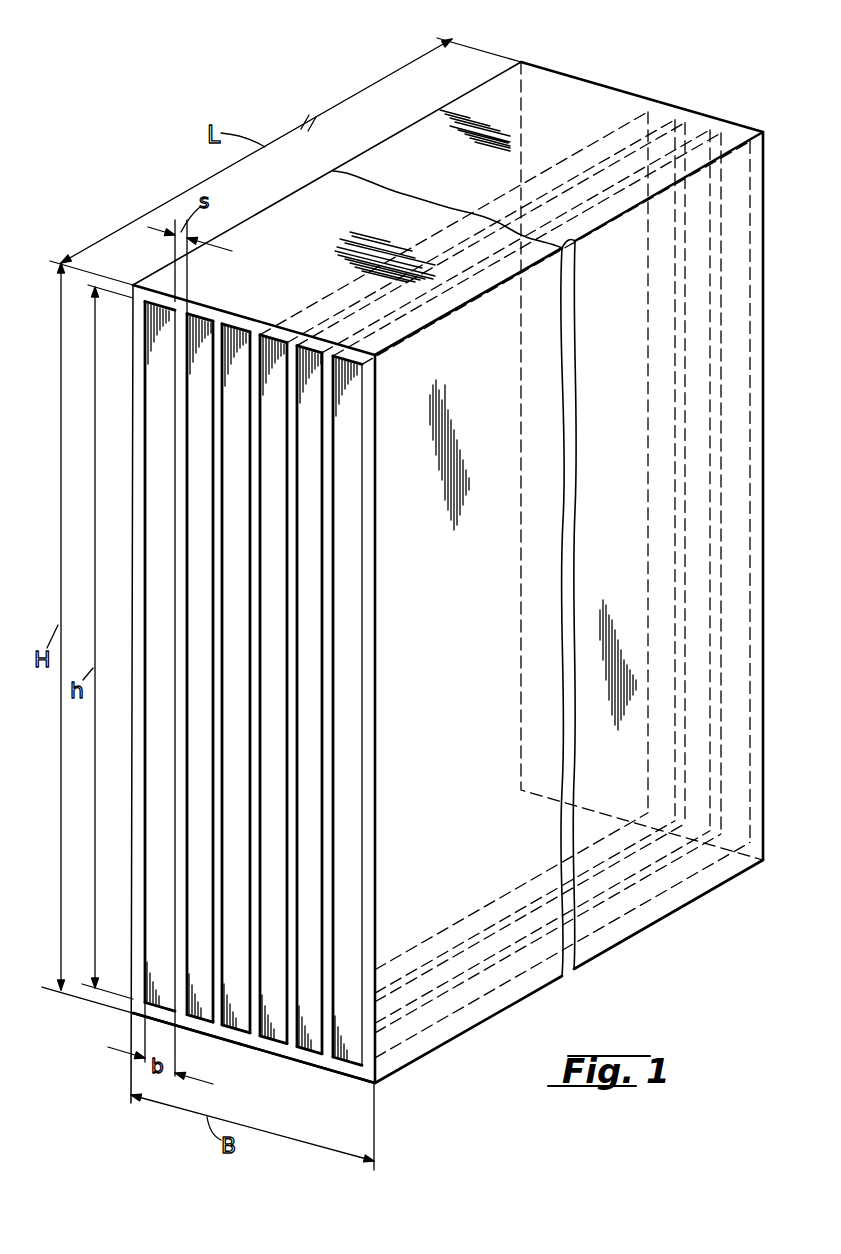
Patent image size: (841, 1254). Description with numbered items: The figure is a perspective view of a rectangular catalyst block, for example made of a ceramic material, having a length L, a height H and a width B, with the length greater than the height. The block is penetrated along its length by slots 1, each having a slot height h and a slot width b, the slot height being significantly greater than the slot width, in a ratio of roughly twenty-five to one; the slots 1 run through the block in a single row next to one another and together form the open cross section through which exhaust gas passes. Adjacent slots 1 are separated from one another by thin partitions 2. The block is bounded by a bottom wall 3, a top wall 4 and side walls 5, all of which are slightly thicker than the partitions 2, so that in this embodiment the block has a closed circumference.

The slots 1 is at (196, 535).
The partitions 2 is at (257, 364).
The bottom wall 3 is at (305, 1057).
The top wall 4 is at (289, 338).
The side walls 5 is at (138, 768).